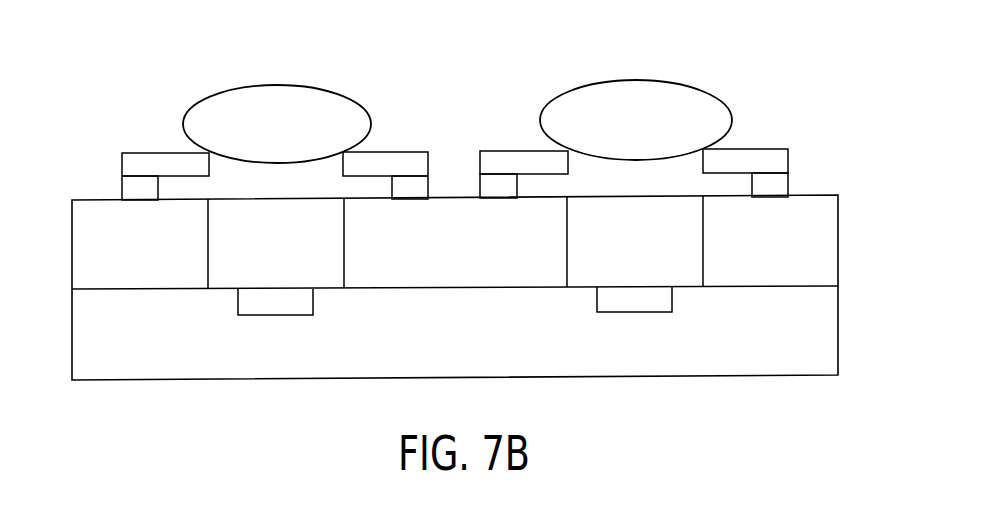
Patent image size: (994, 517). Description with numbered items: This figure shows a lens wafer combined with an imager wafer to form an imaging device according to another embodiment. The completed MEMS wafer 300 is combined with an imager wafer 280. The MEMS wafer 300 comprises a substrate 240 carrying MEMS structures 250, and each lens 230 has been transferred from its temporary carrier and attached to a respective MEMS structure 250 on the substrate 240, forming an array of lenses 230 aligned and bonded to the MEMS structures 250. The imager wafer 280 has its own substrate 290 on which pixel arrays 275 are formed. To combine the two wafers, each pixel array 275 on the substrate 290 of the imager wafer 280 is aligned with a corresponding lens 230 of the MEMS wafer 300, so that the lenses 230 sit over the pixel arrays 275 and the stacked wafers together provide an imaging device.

The lens 230 is at (272, 98).
The substrate 240 is at (822, 255).
The MEMS structure 250 is at (128, 163).
The pixel array 275 is at (275, 303).
The imager wafer 280 is at (822, 330).
The substrate 290 is at (469, 346).
The MEMS wafer 300 is at (762, 64).